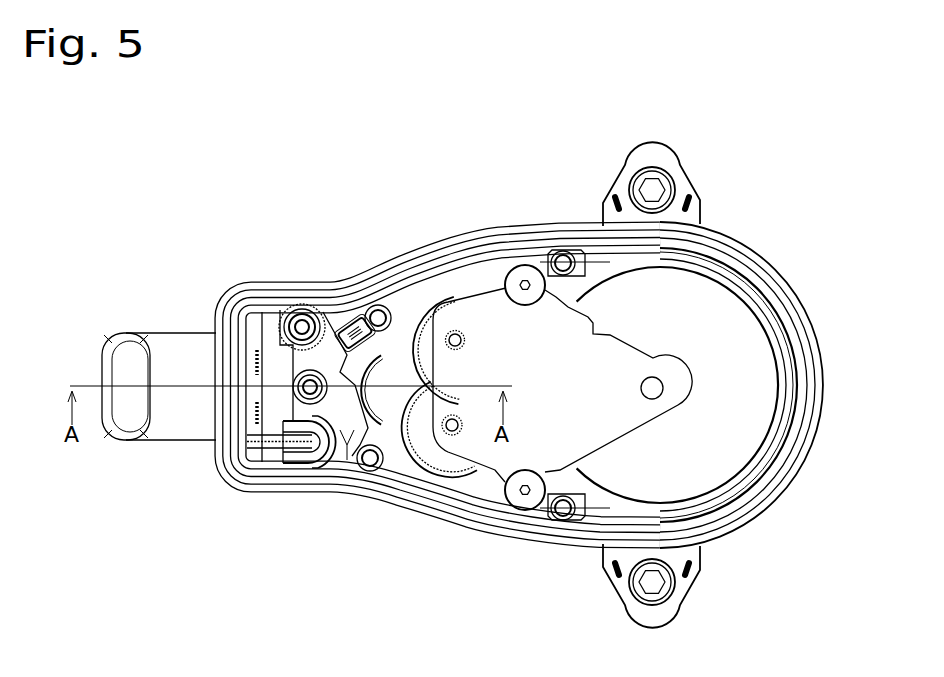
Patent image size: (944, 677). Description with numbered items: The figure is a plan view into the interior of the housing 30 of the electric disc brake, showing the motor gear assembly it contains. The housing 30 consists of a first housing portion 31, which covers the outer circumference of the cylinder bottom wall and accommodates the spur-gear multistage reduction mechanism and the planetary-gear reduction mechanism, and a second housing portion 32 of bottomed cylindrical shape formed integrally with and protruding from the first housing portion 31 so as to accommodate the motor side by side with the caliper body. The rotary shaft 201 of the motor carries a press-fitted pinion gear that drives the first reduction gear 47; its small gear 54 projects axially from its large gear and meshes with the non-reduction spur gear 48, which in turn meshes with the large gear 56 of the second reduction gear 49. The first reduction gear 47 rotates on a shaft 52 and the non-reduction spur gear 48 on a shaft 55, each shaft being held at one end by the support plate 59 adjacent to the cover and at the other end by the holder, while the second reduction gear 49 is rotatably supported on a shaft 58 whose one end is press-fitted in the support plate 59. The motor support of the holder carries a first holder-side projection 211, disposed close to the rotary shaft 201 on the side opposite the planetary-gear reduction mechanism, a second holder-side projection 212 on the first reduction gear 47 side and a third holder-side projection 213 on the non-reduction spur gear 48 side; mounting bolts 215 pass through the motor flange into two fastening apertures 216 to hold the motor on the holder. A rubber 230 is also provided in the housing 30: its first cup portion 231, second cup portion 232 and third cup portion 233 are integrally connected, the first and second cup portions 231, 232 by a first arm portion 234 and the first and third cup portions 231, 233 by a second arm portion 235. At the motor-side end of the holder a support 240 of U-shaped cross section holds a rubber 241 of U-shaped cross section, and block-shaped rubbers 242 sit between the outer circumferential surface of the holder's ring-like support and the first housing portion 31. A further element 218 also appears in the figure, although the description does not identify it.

The housing 30 is at (744, 222).
The first housing portion 31 is at (746, 343).
The second housing portion 32 is at (348, 322).
The first reduction gear 47 is at (435, 295).
The small gear 54 is at (435, 292).
The non-reduction spur gear 48 is at (437, 458).
The second reduction gear 49 is at (761, 356).
The large gear 56 is at (800, 312).
The shaft 52 is at (456, 330).
The shaft 55 is at (455, 432).
The shaft 58 is at (657, 396).
The support plate 59 is at (598, 332).
The rotary shaft 201 is at (402, 462).
The first holder-side projection 211 is at (262, 444).
The first cup portion 231 is at (197, 460).
The second holder-side projection 212 is at (374, 306).
The second cup portion 232 is at (366, 253).
The third holder-side projection 213 is at (378, 472).
The third cup portion 233 is at (387, 540).
The mounting bolts 215 is at (280, 322).
The fastening apertures 216 is at (203, 314).
The intermediate gear 218 is at (520, 266).
The rubber 230 is at (366, 468).
The first arm portion 234 is at (340, 305).
The second arm portion 235 is at (326, 470).
The support 240 is at (243, 497).
The rubber 241 is at (302, 466).
The block-shaped rubber 242 is at (565, 250).